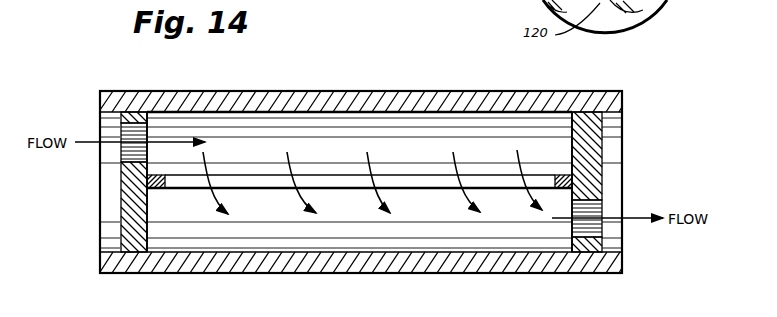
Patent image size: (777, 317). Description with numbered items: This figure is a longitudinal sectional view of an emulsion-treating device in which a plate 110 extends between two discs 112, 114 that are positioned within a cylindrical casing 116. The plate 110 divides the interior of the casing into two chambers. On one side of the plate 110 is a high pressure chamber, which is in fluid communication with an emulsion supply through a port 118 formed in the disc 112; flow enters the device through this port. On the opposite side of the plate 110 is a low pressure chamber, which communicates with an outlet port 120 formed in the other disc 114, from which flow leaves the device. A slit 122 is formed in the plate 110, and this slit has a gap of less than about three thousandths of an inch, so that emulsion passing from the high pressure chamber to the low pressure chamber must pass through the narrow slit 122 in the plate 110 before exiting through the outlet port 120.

The plate 110 is at (153, 190).
The disc 112 is at (122, 207).
The disc 114 is at (605, 152).
The cylindrical casing 116 is at (367, 88).
The port 118 is at (126, 150).
The outlet port 120 is at (602, 208).
The slit 122 is at (263, 180).